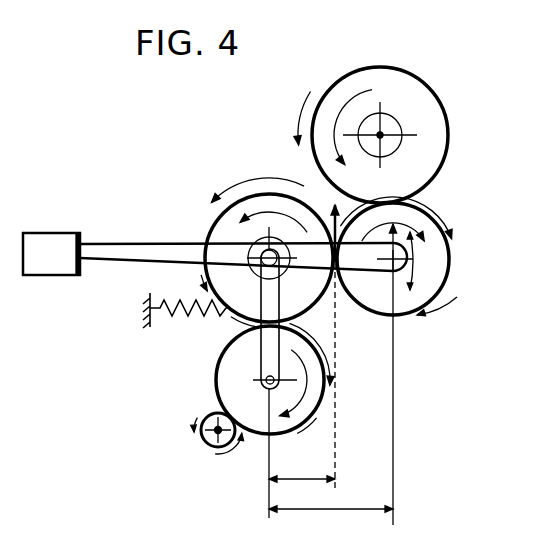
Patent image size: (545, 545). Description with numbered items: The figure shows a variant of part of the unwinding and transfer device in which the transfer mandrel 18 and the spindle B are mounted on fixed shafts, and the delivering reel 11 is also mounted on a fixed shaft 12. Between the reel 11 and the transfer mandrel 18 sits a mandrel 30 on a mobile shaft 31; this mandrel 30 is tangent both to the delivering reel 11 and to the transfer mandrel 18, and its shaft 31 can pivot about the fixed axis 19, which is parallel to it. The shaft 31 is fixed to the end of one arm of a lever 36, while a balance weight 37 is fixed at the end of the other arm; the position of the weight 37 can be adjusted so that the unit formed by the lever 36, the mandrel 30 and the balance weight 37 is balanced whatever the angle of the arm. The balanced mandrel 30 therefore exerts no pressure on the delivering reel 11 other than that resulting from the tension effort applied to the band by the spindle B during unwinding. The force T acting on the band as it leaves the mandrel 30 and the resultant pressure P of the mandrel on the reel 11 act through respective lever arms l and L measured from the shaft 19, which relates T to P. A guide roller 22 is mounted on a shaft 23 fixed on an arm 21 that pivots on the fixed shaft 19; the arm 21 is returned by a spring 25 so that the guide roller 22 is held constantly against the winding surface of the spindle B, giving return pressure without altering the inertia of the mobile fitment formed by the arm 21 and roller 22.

The delivering reel 11 is at (432, 122).
The shaft 12 is at (382, 133).
The transfer mandrel 18 is at (212, 238).
The fixed axis 19 is at (282, 268).
The arm 21 is at (257, 343).
The guide roller 22 is at (235, 380).
The shaft 23 is at (258, 390).
The spring 25 is at (165, 322).
The mandrel 30 is at (440, 255).
The shaft 31 is at (396, 300).
The lever 36 is at (153, 253).
The balance weight 37 is at (42, 263).
The spindle B is at (206, 441).
The force T is at (340, 222).
The resultant pressure P is at (407, 212).
The lever arm l is at (302, 468).
The lever arm L is at (331, 498).